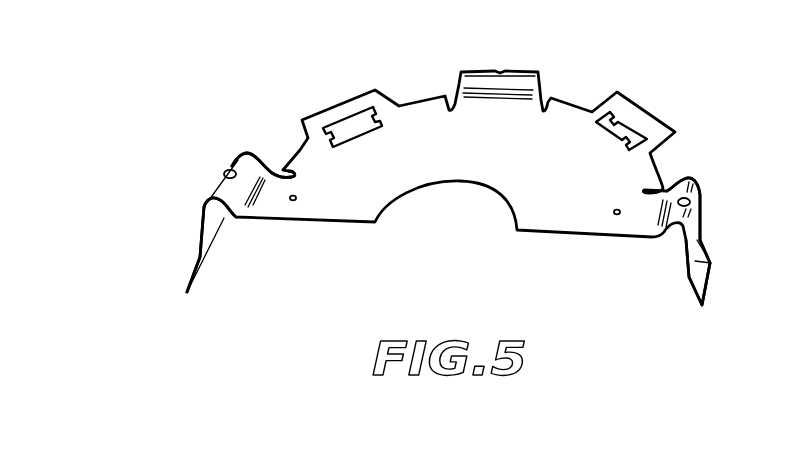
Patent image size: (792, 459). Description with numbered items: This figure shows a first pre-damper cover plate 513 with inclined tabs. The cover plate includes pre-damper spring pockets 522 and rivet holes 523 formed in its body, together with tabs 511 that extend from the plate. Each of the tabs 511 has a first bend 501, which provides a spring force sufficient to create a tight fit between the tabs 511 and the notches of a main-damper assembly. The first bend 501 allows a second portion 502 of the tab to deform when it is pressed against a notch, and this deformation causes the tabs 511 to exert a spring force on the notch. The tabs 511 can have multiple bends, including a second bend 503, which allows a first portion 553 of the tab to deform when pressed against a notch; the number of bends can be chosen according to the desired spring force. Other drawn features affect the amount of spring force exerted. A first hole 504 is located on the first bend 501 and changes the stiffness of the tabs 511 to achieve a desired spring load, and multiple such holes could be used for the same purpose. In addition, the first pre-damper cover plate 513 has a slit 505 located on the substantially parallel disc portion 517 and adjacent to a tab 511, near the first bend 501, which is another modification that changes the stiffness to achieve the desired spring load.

The first bend 501 is at (238, 158).
The second portion 502 is at (214, 208).
The second bend 503 is at (708, 264).
The first hole 504 is at (230, 174).
The slit 505 is at (280, 175).
The tabs 511 is at (195, 268).
The first pre-damper cover plate 513 is at (360, 288).
The substantially parallel disc portion 517 is at (418, 140).
The pre-damper spring pockets 522 is at (627, 128).
The rivet holes 523 is at (492, 109).
The first portion 553 is at (703, 277).